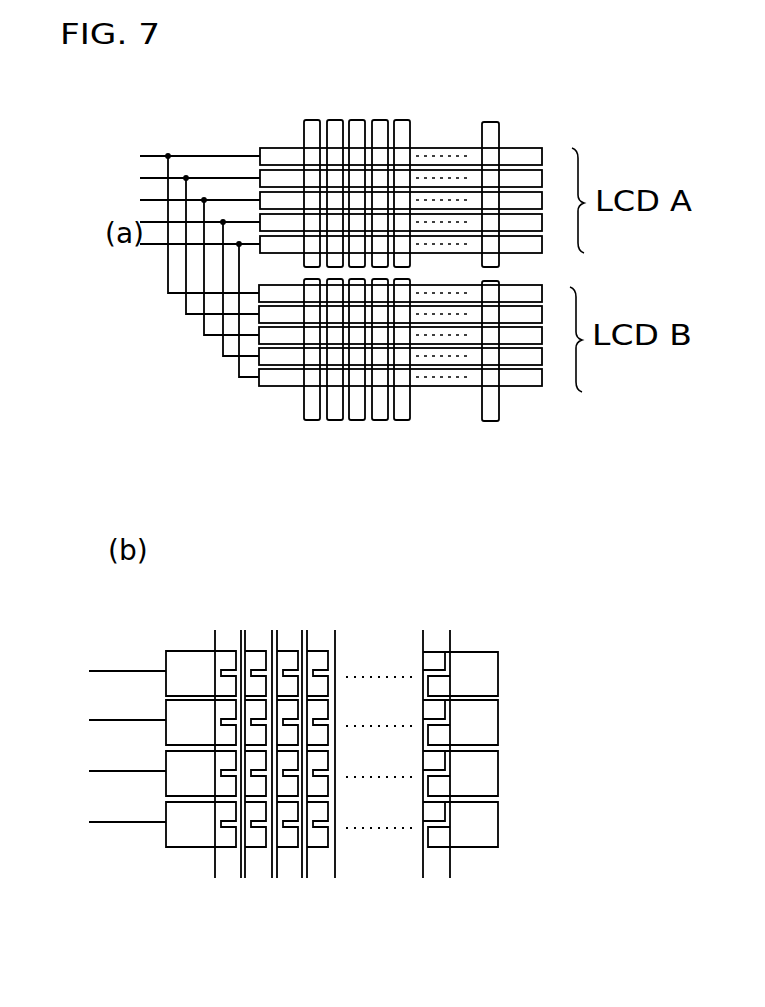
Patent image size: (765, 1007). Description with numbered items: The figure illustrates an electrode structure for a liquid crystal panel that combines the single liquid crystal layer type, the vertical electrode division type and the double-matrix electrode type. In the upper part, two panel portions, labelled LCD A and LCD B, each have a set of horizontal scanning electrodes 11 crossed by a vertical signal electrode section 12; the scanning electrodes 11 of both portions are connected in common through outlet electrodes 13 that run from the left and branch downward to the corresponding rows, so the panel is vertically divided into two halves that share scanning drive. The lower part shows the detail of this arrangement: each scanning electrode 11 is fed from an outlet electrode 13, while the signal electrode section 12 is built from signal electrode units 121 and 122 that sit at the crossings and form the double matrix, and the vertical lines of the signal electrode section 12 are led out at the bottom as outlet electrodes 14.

The scanning electrodes 11 is at (288, 153).
The signal electrode section 12 is at (428, 112).
The outlet electrodes 13 is at (221, 388).
The signal electrode unit 121 is at (317, 653).
The signal electrode unit 122 is at (333, 683).
The outlet electrodes 14 is at (335, 862).